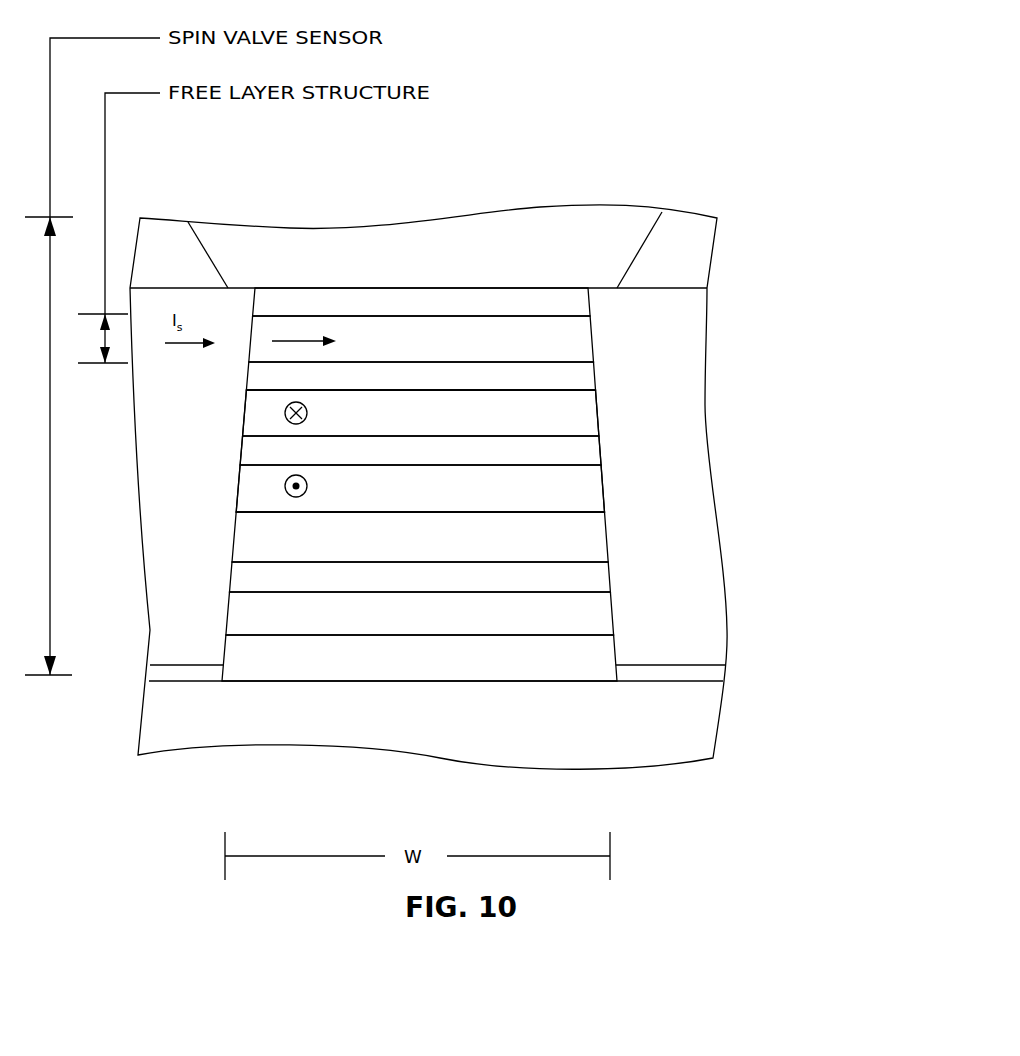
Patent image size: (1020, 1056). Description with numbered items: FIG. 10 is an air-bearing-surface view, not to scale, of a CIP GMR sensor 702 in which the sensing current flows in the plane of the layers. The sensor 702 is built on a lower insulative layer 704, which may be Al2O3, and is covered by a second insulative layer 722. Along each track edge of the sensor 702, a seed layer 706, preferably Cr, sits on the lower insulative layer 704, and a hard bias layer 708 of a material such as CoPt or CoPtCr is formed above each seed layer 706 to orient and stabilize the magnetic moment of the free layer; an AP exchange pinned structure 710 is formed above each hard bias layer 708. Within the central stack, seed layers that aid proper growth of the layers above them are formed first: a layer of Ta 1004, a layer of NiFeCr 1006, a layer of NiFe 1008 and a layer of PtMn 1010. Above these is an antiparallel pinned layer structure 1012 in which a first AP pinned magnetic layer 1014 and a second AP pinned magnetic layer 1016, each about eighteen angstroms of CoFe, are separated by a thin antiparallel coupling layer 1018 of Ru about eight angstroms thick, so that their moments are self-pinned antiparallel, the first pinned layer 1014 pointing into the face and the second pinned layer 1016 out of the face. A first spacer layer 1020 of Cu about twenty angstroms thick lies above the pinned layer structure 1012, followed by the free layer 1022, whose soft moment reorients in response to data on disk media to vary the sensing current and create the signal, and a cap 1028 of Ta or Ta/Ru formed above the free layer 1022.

The sensor 702 is at (636, 134).
The second insulative layer 722 is at (592, 205).
The AP exchange pinned structure 710 is at (707, 250).
The lower insulative layer 704 is at (716, 722).
The seed layer 706 is at (723, 674).
The hard bias layer 708 is at (710, 428).
The cap 1028 is at (589, 307).
The free layer 1022 is at (592, 335).
The first spacer layer 1020 is at (594, 372).
The second AP pinned magnetic layer 1016 is at (597, 404).
The antiparallel coupling layer 1018 is at (600, 458).
The first AP pinned magnetic layer 1014 is at (603, 488).
The layer of PtMn 1010 is at (606, 535).
The layer of NiFe 1008 is at (609, 577).
The layer of NiFeCr 1006 is at (612, 614).
The layer of Ta 1004 is at (615, 657).
The antiparallel pinned layer structure 1012 is at (78, 389).